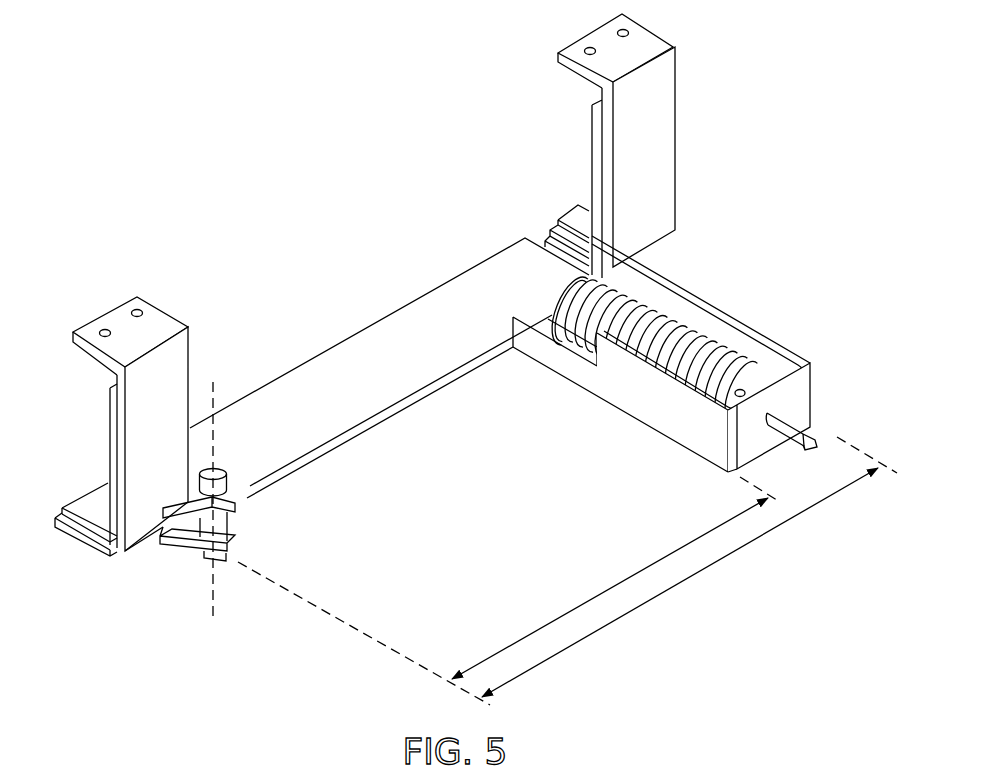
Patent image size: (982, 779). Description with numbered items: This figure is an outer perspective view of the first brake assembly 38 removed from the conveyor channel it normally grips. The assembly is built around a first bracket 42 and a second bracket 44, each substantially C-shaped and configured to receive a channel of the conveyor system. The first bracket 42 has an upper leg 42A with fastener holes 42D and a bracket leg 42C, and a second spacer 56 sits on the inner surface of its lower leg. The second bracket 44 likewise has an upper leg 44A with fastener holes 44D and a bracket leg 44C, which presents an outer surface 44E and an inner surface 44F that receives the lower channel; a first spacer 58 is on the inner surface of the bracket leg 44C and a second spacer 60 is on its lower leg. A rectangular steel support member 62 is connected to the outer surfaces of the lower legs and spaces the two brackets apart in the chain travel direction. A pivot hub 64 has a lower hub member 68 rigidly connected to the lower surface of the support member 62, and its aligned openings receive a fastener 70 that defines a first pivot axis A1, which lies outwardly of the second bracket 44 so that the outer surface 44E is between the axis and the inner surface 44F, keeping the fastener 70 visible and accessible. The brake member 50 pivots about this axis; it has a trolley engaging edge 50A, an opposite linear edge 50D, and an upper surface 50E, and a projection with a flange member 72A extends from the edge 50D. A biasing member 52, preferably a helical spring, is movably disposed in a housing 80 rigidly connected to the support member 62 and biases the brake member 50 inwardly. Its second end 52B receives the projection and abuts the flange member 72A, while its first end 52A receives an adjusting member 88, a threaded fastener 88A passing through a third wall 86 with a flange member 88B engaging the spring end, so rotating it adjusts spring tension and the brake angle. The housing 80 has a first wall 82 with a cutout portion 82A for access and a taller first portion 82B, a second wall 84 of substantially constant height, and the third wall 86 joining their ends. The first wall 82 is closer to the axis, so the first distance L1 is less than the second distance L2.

The first brake assembly 38 is at (537, 490).
The first bracket 42 is at (635, 143).
The upper leg 42A is at (618, 48).
The bracket leg 42C is at (649, 163).
The fastener holes 42D is at (589, 48).
The second bracket 44 is at (137, 420).
The upper leg 44A is at (112, 314).
The bracket leg 44C is at (169, 368).
The fastener holes 44D is at (134, 310).
The outer surface 44E is at (150, 413).
The inner surface 44F is at (117, 374).
The brake member 50 is at (389, 362).
The trolley engaging edge 50A is at (315, 356).
The edge 50D is at (377, 426).
The upper surface 50E is at (413, 352).
The biasing member 52 is at (627, 332).
The first end 52A is at (752, 377).
The second end 52B is at (667, 316).
The second spacer 56 is at (585, 214).
The first spacer 58 is at (108, 448).
The second spacer 60 is at (96, 500).
The support member 62 is at (72, 541).
The pivot hub 64 is at (152, 555).
The lower hub member 68 is at (182, 530).
The fastener 70 is at (216, 468).
The flange member 72A is at (561, 291).
The housing 80 is at (661, 419).
The first wall 82 is at (620, 395).
The cutout portion 82A is at (570, 348).
The first portion 82B is at (671, 373).
The second wall 84 is at (771, 335).
The third wall 86 is at (757, 440).
The adjusting member 88 is at (811, 392).
The threaded fastener 88A is at (788, 412).
The flange member 88B is at (754, 377).
The first pivot axis A1 is at (213, 622).
The first distance L1 is at (509, 591).
The second distance L2 is at (689, 567).